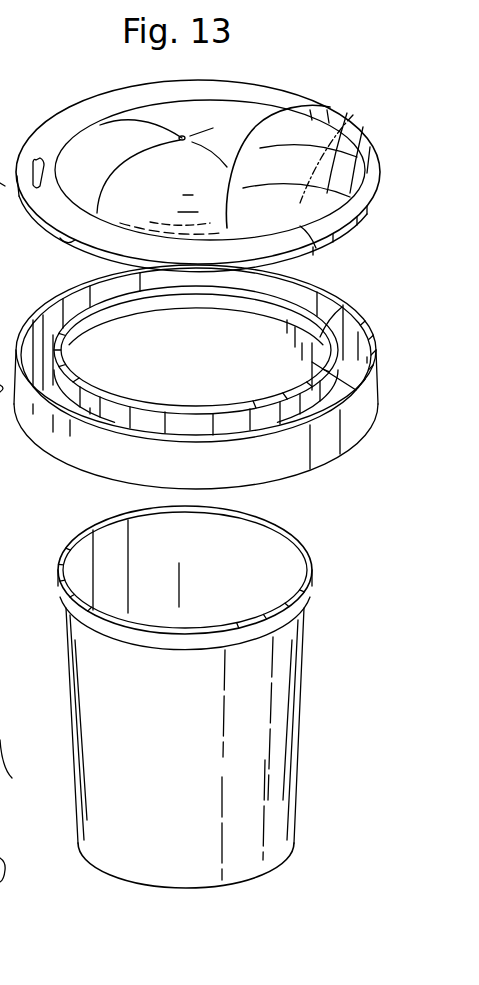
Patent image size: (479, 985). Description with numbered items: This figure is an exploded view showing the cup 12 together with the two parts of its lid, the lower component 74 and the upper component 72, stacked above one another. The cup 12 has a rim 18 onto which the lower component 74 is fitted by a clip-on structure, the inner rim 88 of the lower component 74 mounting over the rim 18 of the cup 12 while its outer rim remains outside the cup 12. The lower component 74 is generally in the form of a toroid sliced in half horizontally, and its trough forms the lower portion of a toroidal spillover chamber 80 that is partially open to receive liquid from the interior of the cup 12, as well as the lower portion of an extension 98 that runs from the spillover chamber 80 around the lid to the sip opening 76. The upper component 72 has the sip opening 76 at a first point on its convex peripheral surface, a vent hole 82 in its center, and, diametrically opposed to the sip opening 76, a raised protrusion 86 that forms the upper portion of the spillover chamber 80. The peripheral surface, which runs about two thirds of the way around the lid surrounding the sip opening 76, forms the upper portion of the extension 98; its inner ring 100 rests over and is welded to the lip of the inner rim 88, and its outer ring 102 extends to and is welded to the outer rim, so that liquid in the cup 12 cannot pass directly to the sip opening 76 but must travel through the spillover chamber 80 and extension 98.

The cup 12 is at (297, 750).
The rim 18 is at (310, 563).
The upper component 72 is at (120, 80).
The lower component 74 is at (33, 301).
The sip opening 76 is at (36, 158).
The spillover chamber 80 is at (347, 443).
The vent hole 82 is at (357, 298).
The protrusion 86 is at (320, 105).
The inner rim 88 is at (323, 280).
The extension 98 is at (107, 463).
The inner ring 100 is at (220, 102).
The outer ring 102 is at (58, 243).